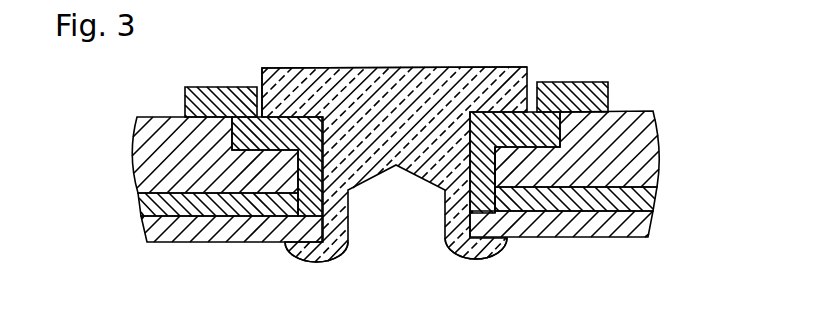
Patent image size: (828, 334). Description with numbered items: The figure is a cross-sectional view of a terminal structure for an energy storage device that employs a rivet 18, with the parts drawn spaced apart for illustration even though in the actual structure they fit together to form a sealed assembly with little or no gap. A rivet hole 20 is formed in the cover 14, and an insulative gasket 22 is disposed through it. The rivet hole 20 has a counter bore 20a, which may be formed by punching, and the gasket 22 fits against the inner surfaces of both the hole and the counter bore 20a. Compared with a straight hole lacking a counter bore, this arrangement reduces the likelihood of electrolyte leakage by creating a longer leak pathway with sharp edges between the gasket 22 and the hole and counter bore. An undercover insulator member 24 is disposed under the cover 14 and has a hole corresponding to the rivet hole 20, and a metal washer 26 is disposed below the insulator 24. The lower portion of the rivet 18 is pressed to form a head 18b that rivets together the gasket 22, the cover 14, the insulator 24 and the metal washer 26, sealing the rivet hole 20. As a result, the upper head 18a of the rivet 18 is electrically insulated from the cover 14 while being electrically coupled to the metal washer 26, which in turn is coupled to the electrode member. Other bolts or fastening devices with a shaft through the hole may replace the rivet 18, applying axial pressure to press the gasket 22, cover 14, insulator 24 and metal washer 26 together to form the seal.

The cover 14 is at (643, 163).
The rivet 18 is at (423, 125).
The upper head 18a is at (332, 92).
The head 18b is at (477, 253).
The rivet hole 20 is at (496, 175).
The counter bore 20a is at (565, 126).
The insulative gasket 22 is at (576, 92).
The undercover insulator member 24 is at (647, 203).
The metal washer 26 is at (643, 233).